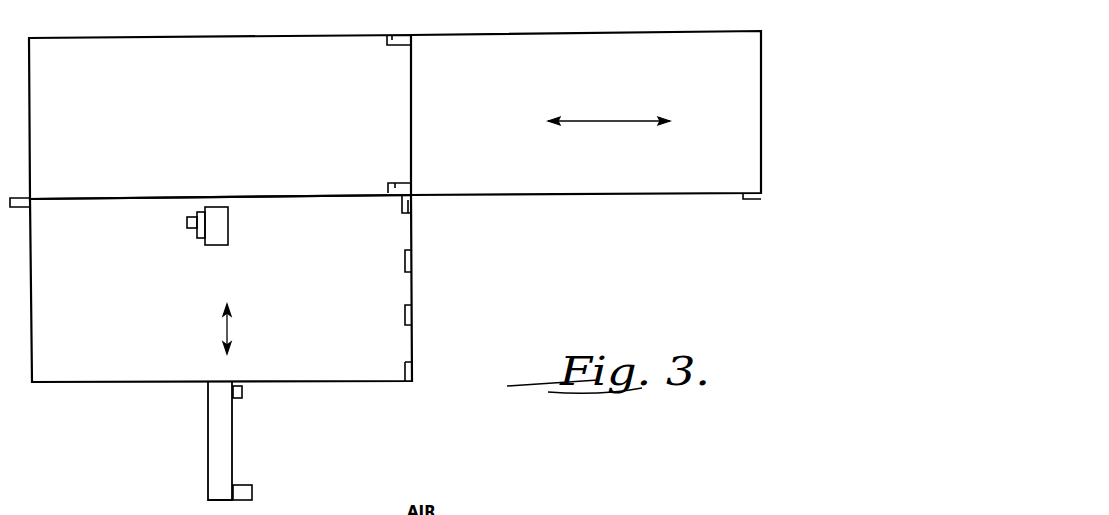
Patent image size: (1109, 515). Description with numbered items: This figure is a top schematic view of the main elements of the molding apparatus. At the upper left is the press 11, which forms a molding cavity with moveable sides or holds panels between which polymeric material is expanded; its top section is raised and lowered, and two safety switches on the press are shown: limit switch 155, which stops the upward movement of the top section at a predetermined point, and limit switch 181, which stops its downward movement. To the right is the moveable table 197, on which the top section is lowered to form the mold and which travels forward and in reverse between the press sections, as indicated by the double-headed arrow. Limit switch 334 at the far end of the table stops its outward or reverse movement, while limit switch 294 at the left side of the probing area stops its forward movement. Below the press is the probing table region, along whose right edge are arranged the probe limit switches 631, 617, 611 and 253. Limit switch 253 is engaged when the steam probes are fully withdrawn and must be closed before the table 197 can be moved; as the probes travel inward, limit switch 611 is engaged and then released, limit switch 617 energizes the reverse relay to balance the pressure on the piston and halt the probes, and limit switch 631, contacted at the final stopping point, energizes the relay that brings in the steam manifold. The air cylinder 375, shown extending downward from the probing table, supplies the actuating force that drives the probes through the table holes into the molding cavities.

The press 11 is at (232, 70).
The limit switch 155 is at (393, 37).
The limit switch 181 is at (399, 182).
The table 197 is at (592, 52).
The limit switch 334 is at (751, 200).
The limit switch 631 is at (413, 205).
The limit switch 617 is at (413, 258).
The limit switch 611 is at (413, 313).
The limit switch 253 is at (413, 367).
The limit switch 294 is at (22, 207).
The air cylinder 375 is at (217, 436).